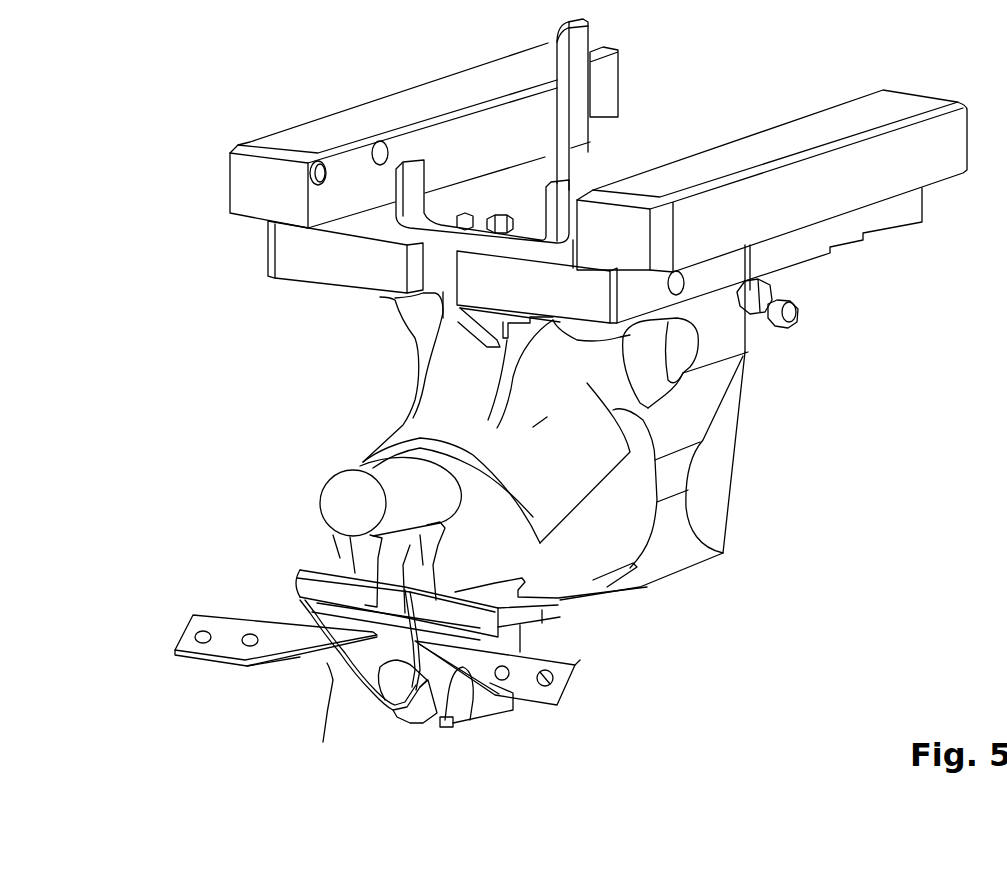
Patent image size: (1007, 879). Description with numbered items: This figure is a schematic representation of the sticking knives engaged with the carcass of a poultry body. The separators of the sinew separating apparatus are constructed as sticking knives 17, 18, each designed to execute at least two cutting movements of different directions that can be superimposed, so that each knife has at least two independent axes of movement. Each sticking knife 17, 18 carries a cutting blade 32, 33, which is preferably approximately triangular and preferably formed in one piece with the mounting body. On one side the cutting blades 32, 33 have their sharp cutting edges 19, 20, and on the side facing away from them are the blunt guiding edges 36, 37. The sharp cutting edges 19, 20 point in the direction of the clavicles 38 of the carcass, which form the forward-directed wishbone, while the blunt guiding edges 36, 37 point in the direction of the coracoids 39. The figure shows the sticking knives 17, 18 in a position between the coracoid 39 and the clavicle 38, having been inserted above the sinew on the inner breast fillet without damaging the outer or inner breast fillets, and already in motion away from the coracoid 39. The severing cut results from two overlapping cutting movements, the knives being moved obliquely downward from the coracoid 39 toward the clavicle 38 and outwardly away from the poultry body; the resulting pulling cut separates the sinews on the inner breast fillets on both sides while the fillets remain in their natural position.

The sticking knife 17 is at (583, 673).
The sticking knife 18 is at (204, 604).
The cutting edge 19 is at (445, 727).
The cutting edge 20 is at (300, 657).
The cutting blade 32 is at (552, 682).
The cutting blade 33 is at (277, 633).
The guiding edge 36 is at (582, 663).
The guiding edge 37 is at (323, 603).
The clavicle 38 is at (368, 693).
The coracoid 39 is at (317, 580).